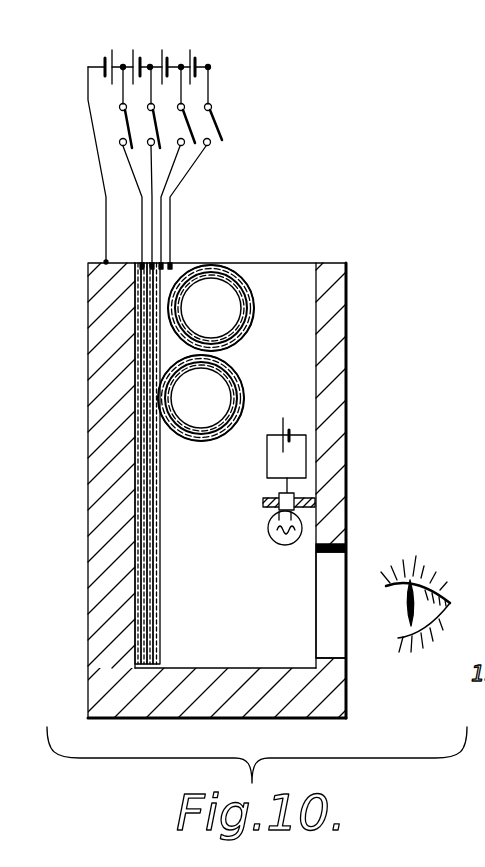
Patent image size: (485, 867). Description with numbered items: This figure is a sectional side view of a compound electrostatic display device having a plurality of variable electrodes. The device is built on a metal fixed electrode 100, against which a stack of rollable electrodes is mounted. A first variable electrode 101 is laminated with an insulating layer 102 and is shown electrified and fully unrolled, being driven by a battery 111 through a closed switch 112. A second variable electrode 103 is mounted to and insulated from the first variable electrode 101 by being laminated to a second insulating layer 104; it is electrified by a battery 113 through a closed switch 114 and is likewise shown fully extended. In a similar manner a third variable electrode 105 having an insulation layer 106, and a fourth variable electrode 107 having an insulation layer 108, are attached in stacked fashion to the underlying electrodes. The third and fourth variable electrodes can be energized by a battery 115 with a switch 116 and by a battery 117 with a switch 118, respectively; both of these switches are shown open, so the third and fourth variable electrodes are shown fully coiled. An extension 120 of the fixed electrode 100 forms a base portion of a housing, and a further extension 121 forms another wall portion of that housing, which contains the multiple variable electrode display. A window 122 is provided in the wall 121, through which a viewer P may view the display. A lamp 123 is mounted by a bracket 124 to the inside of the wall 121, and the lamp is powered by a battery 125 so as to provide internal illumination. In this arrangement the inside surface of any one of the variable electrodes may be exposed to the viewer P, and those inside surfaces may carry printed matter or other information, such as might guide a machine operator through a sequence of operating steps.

The fixed electrode 100 is at (105, 625).
The first variable electrode 101 is at (150, 564).
The insulating layer 102 is at (145, 597).
The second variable electrode 103 is at (153, 473).
The second insulating layer 104 is at (155, 505).
The third variable electrode 105 is at (241, 368).
The insulation layer 106 is at (246, 393).
The fourth variable electrode 107 is at (214, 265).
The insulation layer 108 is at (243, 283).
The battery 111 is at (110, 55).
The switch 112 is at (125, 122).
The battery 113 is at (134, 50).
The switch 114 is at (154, 123).
The battery 115 is at (167, 52).
The switch 116 is at (186, 124).
The battery 117 is at (193, 54).
The switch 118 is at (219, 130).
The extension 120 is at (145, 720).
The extension 121 is at (326, 413).
The window 122 is at (331, 648).
The lamp 123 is at (306, 517).
The bracket 124 is at (308, 490).
The battery 125 is at (290, 421).
The viewer P is at (424, 584).